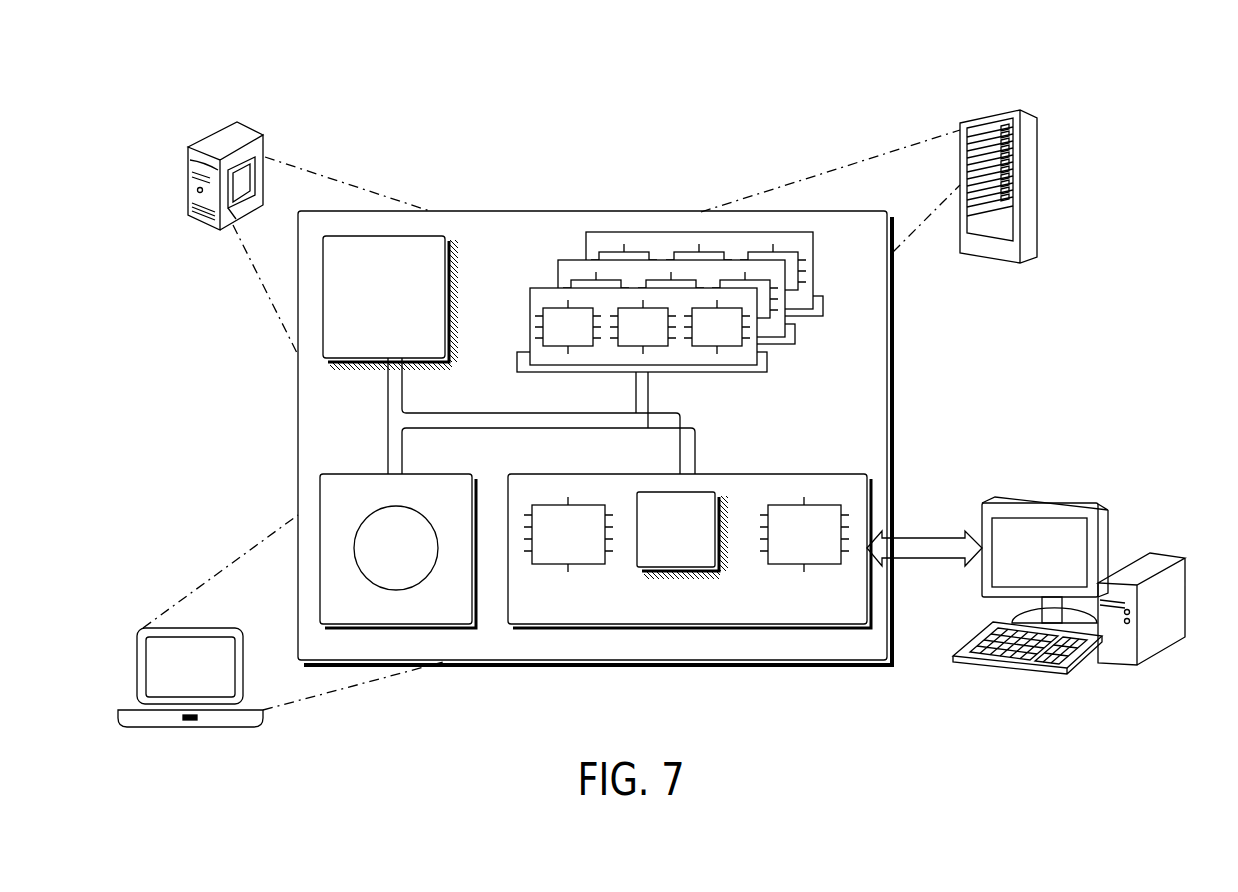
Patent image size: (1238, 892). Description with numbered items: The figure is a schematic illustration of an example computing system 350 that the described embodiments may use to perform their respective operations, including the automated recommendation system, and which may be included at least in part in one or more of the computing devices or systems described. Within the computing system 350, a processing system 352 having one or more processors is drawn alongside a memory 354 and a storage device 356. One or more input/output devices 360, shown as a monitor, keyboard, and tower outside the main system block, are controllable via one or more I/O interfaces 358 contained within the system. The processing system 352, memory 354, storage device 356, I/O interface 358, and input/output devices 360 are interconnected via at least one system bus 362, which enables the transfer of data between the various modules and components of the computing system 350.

The computing system 350 is at (828, 142).
The processing system 352 is at (364, 335).
The memory 354 is at (783, 358).
The storage device 356 is at (332, 613).
The I/O interface 358 is at (798, 609).
The input/output device 360 is at (1048, 503).
The system bus 362 is at (540, 430).